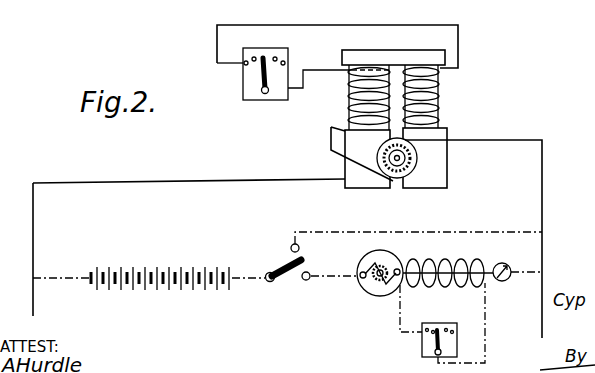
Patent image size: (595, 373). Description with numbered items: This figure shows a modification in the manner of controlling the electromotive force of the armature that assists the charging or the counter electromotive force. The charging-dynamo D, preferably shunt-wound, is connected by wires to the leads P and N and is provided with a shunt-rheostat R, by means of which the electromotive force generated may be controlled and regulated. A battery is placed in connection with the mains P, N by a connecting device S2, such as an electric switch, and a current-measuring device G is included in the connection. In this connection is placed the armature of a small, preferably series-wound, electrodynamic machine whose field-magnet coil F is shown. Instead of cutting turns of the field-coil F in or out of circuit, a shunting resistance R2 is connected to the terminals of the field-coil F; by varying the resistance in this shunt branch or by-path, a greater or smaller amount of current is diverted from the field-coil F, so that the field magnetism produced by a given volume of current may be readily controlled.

The shunt-rheostat R is at (243, 85).
The charging-dynamo D is at (392, 97).
The lead P is at (61, 241).
The lead N is at (538, 237).
The connecting device S2 is at (402, 257).
The field-magnet coil F is at (448, 284).
The current-measuring device G is at (502, 261).
The shunting resistance R2 is at (442, 323).